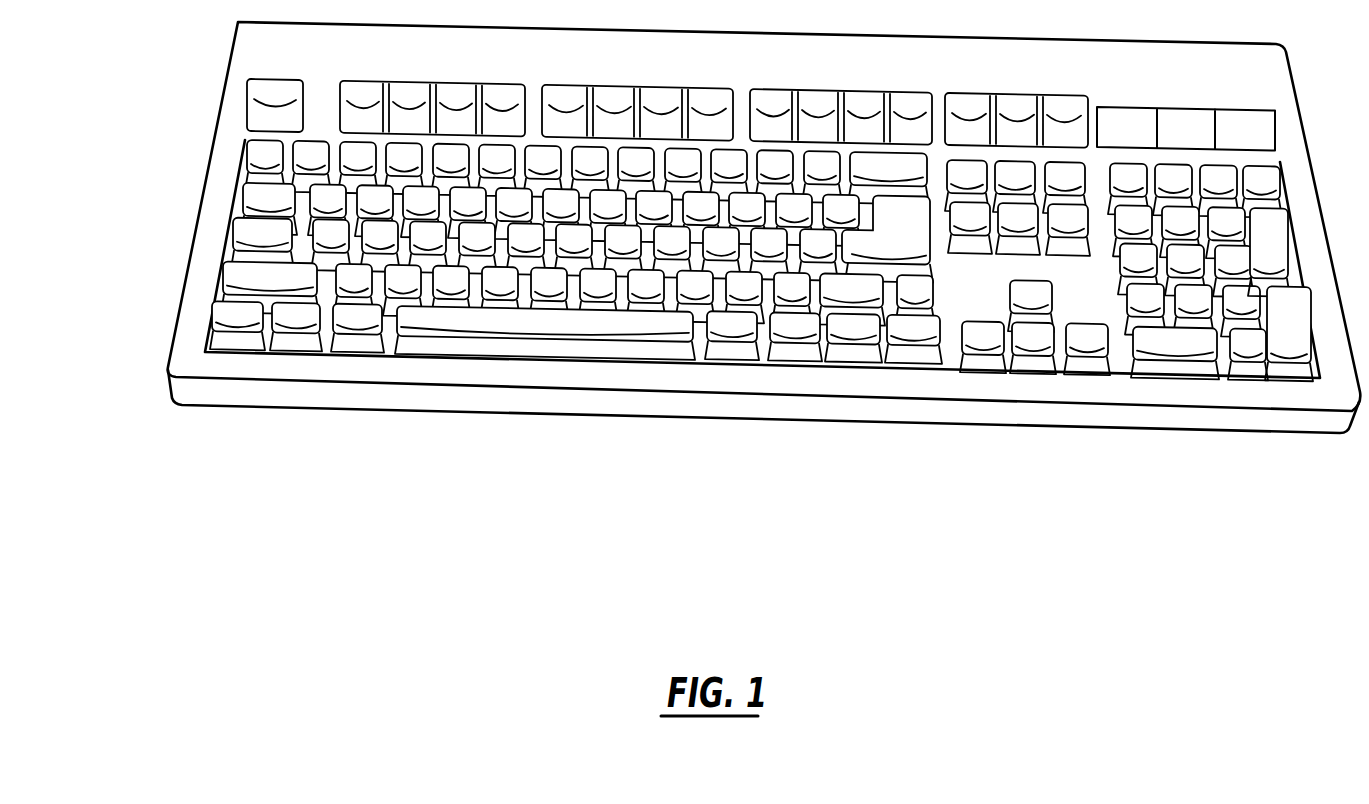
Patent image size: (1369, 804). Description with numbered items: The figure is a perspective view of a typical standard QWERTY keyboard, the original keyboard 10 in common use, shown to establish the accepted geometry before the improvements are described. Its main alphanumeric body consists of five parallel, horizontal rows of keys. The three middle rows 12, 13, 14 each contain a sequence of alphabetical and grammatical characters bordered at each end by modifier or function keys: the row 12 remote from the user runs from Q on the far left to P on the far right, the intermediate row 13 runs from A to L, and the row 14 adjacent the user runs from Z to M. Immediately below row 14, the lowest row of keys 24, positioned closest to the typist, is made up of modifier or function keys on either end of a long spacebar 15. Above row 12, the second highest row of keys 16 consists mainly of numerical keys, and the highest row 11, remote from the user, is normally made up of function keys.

The original keyboard 10 is at (433, 420).
The highest row 11 is at (219, 100).
The second highest row of keys 16 is at (209, 158).
The row remote from the user 12 is at (202, 192).
The intermediate row 13 is at (197, 228).
The row adjacent a user 14 is at (185, 275).
The lowest row of keys 24 is at (498, 443).
The spacebar 15 is at (535, 336).